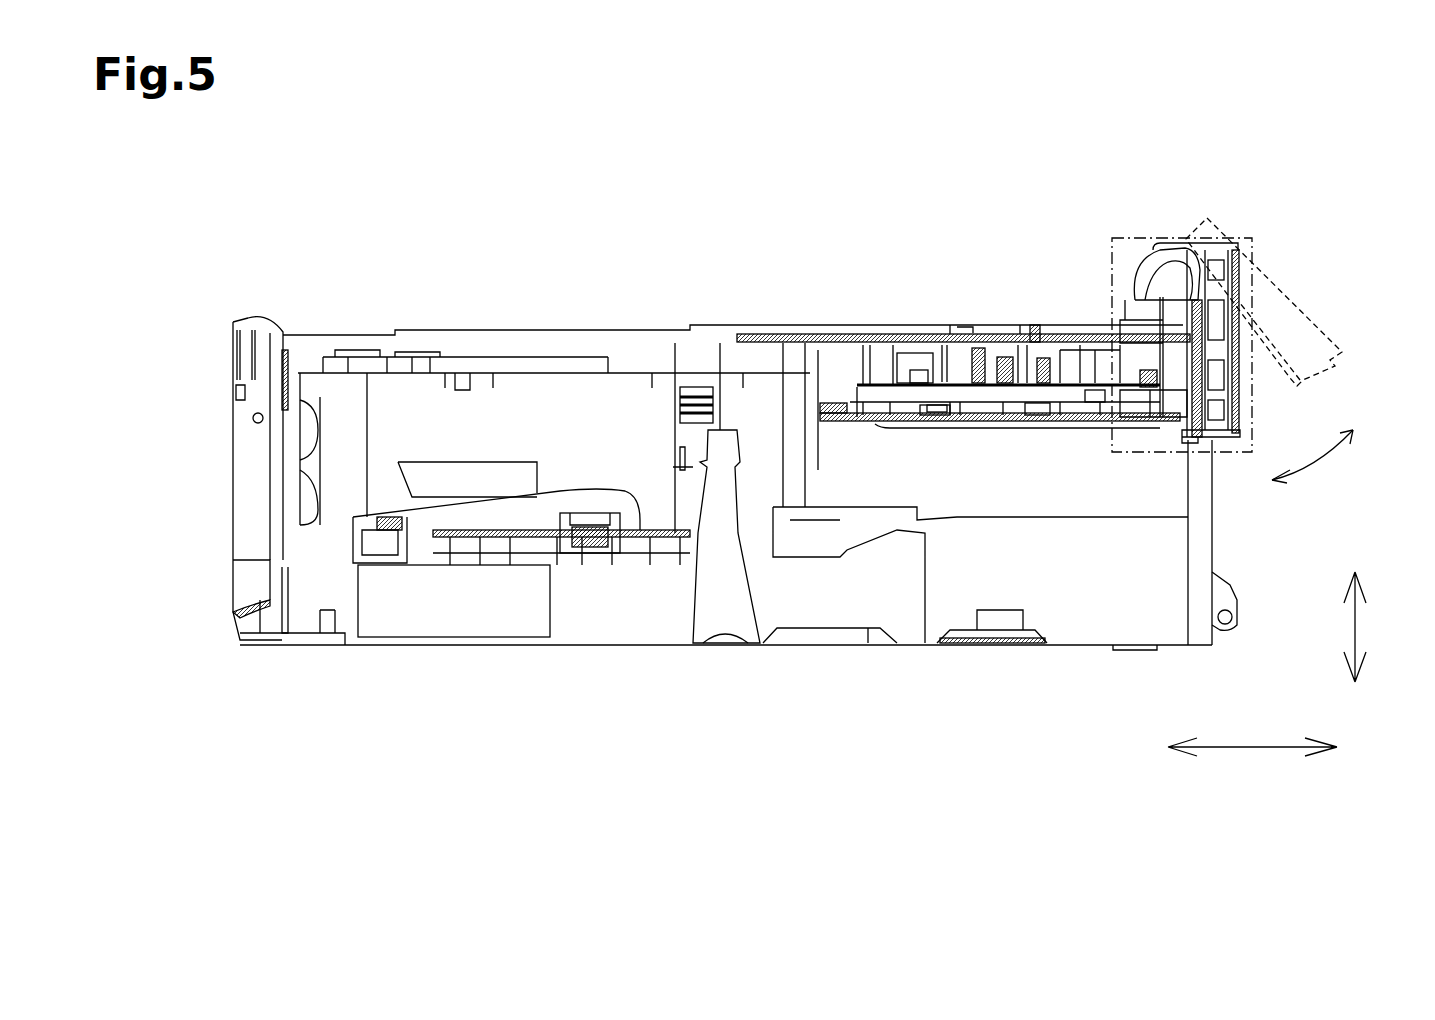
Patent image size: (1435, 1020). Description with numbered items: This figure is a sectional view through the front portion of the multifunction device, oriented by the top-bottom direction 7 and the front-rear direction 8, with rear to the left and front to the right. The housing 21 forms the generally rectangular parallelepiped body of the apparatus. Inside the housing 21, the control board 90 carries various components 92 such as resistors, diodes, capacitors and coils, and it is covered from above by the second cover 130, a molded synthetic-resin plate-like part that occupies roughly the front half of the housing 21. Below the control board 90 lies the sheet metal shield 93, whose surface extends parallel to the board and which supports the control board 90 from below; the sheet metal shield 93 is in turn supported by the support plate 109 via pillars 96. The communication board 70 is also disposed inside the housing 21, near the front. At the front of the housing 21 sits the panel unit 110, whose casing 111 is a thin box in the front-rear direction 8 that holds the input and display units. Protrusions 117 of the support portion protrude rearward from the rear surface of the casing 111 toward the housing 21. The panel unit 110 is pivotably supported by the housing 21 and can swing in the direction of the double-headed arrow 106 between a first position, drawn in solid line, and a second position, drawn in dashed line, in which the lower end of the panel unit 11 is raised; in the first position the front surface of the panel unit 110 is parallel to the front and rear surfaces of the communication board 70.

The panel unit 11 is at (262, 240).
The housing 21 is at (230, 485).
The second cover 130 is at (997, 333).
The components 92 is at (923, 337).
The pillars 96 is at (1013, 410).
The support plate 109 is at (948, 420).
The control board 90 is at (1037, 420).
The sheet metal shield 93 is at (1093, 402).
The communication board 70 is at (1125, 300).
The protrusions 117 is at (1143, 297).
The casing 111 is at (1171, 246).
The panel unit 110 is at (1245, 241).
The double-headed arrow 106 is at (1318, 460).
The top-bottom direction 7 is at (1356, 624).
The front-rear direction 8 is at (1250, 746).